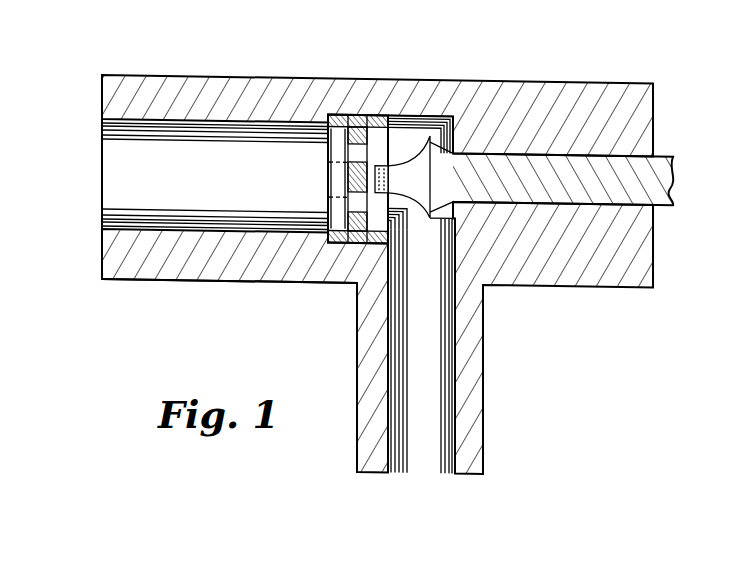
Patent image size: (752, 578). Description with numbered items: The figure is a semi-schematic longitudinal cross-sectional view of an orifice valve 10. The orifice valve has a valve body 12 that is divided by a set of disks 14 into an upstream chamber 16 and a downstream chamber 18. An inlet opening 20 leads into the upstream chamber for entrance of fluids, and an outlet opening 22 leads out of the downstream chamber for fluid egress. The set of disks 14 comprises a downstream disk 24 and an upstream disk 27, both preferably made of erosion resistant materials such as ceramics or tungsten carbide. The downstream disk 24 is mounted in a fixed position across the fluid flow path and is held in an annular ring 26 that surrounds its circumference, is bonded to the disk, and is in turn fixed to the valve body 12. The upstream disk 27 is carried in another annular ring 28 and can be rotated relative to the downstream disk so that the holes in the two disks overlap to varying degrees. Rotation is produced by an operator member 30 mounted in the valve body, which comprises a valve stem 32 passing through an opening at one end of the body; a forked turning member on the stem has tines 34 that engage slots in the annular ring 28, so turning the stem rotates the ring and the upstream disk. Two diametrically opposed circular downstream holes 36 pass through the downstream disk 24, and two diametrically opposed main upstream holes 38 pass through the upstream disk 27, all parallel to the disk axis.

The orifice valve 10 is at (245, 298).
The valve body 12 is at (188, 80).
The set of disks 14 is at (318, 154).
The upstream chamber 16 is at (437, 357).
The downstream chamber 18 is at (247, 135).
The inlet opening 20 is at (420, 463).
The outlet opening 22 is at (117, 196).
The downstream disk 24 is at (327, 214).
The annular ring 26 is at (339, 116).
The upstream disk 27 is at (333, 282).
The annular ring 28 is at (390, 240).
The operator member 30 is at (665, 153).
The valve stem 32 is at (643, 190).
The tines 34 is at (408, 192).
The downstream holes 36 is at (327, 170).
The upstream holes 38 is at (370, 141).